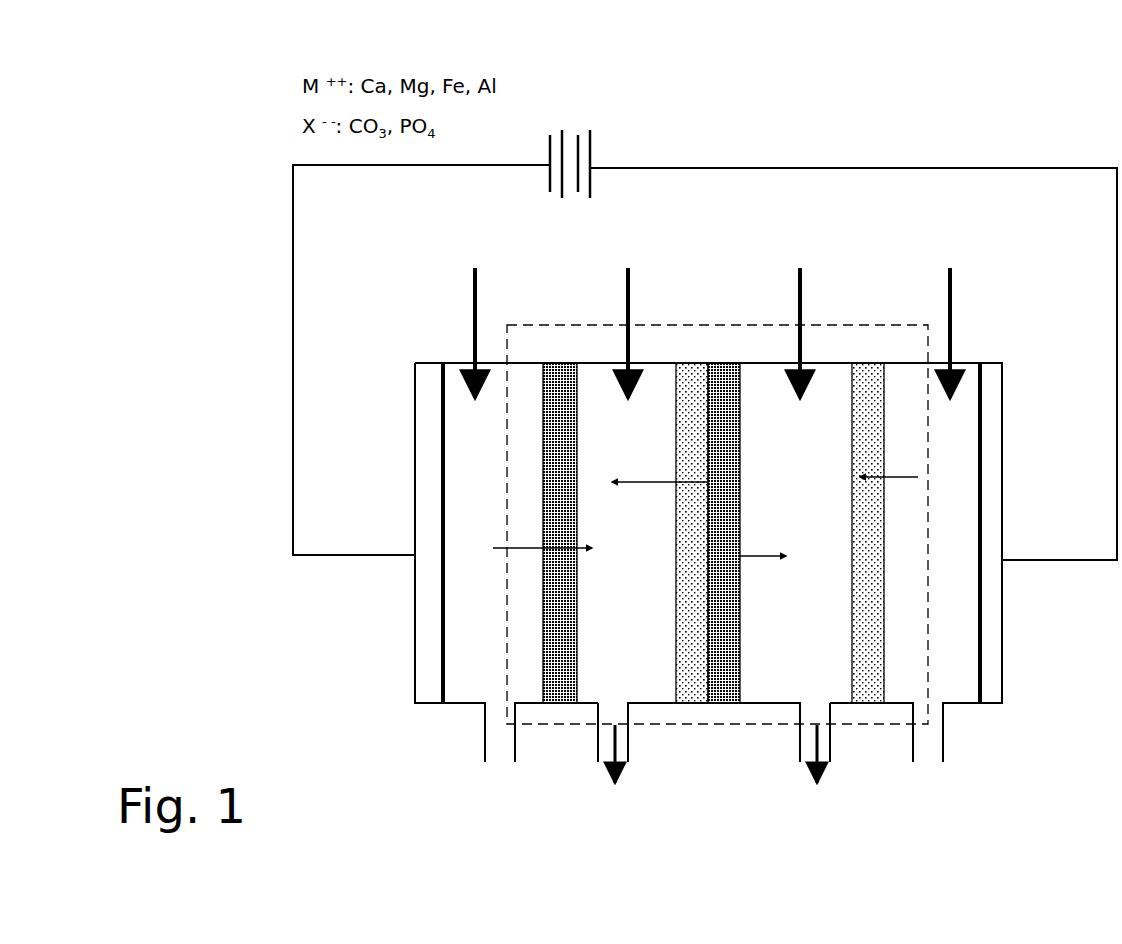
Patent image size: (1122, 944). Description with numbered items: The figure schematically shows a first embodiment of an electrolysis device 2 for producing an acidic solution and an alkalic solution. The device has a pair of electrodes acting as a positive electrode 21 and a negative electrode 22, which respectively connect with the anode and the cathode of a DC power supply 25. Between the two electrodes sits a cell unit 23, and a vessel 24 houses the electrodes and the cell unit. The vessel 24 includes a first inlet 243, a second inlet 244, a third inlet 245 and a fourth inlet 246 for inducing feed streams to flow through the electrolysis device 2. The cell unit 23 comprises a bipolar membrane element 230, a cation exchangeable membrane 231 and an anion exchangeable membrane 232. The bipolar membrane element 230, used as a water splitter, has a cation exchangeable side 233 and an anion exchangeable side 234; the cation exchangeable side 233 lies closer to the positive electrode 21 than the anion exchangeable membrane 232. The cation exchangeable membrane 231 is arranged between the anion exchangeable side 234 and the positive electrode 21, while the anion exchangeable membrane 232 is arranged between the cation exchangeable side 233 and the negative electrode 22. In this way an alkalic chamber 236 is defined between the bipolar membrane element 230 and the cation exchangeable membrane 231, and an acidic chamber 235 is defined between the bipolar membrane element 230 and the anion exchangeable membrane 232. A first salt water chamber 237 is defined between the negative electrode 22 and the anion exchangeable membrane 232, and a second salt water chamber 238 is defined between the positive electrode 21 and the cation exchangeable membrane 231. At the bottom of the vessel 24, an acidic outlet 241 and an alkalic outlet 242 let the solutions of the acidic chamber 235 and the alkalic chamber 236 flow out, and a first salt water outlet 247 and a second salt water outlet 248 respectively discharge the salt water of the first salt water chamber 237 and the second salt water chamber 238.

The electrolysis device 2 is at (252, 146).
The DC power supply 25 is at (578, 138).
The positive electrode 21 is at (980, 465).
The negative electrode 22 is at (443, 460).
The cell unit 23 is at (930, 613).
The vessel 24 is at (415, 612).
The bipolar membrane element 230 is at (714, 460).
The cation exchangeable side 233 is at (697, 363).
The anion exchangeable side 234 is at (745, 489).
The acidic chamber 235 is at (646, 680).
The alkalic chamber 236 is at (826, 680).
The first salt water chamber 237 is at (518, 579).
The second salt water chamber 238 is at (921, 563).
The anion exchangeable membrane 232 is at (557, 705).
The cation exchangeable membrane 231 is at (865, 707).
The acidic outlet 241 is at (627, 730).
The alkalic outlet 242 is at (805, 730).
The first inlet 243 is at (462, 362).
The second inlet 244 is at (962, 365).
The third inlet 245 is at (592, 367).
The fourth inlet 246 is at (840, 367).
The first salt water outlet 247 is at (497, 750).
The second salt water outlet 248 is at (928, 753).